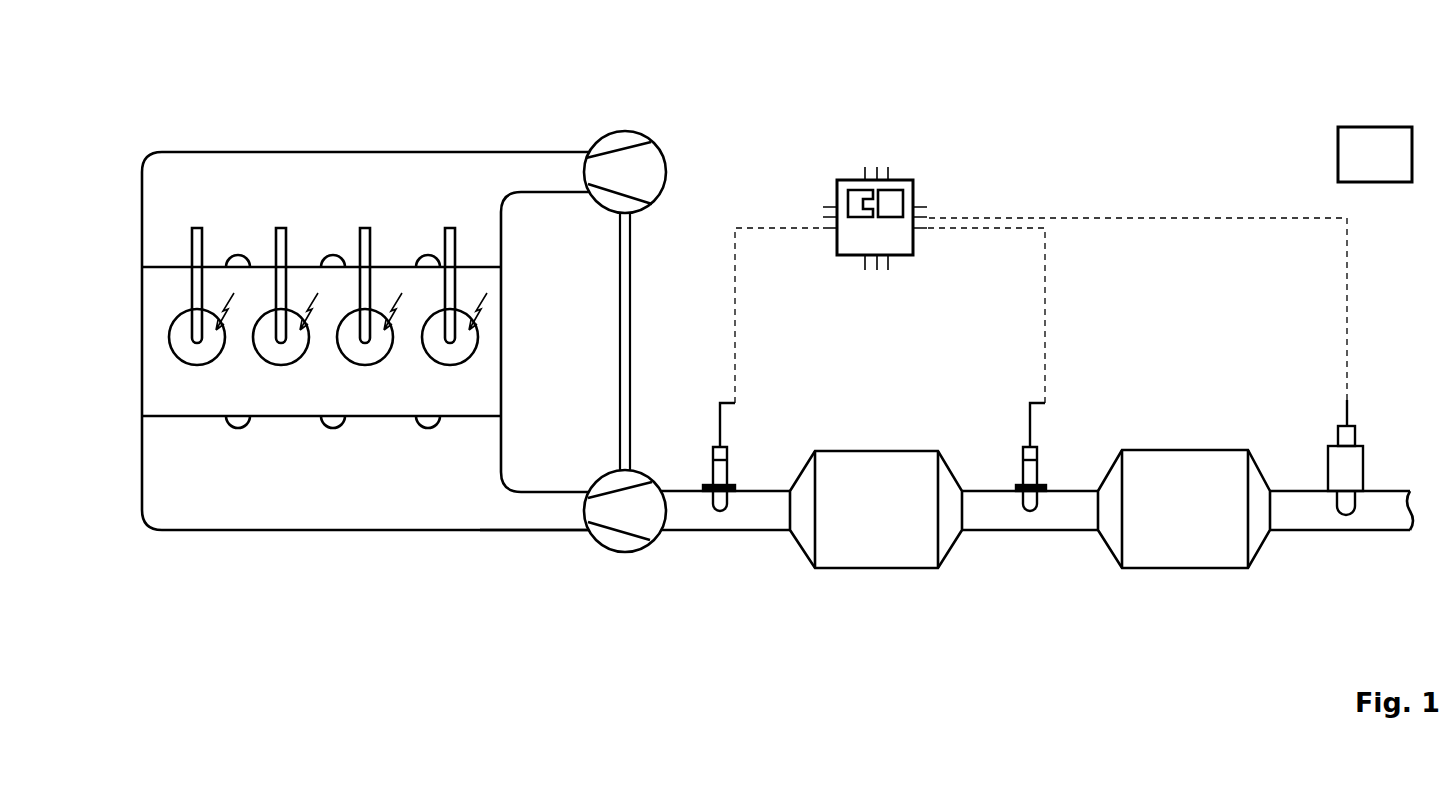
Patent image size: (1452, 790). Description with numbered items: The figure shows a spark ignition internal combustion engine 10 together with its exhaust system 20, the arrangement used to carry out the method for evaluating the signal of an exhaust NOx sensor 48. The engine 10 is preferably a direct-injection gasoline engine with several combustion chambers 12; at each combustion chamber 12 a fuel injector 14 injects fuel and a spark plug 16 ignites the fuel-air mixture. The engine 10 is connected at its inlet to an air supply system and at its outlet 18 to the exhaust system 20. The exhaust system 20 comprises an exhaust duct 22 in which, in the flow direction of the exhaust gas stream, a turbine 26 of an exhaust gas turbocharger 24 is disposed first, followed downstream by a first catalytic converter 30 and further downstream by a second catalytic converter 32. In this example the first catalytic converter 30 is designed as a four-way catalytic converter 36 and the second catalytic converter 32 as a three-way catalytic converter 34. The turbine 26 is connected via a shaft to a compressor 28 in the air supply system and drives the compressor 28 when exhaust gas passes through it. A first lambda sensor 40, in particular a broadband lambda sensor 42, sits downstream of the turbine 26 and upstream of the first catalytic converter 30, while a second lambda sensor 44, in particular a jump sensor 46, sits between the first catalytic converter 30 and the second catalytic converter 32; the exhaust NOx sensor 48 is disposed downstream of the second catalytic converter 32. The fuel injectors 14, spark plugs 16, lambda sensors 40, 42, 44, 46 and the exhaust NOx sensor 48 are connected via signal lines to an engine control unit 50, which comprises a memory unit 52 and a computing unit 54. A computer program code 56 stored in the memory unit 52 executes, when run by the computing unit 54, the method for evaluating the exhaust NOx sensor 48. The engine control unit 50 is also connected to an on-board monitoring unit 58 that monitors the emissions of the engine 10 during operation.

The spark ignition internal combustion engine 10 is at (150, 387).
The combustion chamber 12 is at (170, 337).
The fuel injector 14 is at (192, 288).
The spark plug 16 is at (226, 296).
The outlet 18 is at (152, 453).
The exhaust system 20 is at (1030, 625).
The exhaust duct 22 is at (540, 532).
The exhaust gas turbocharger 24 is at (645, 338).
The turbine 26 is at (624, 553).
The compressor 28 is at (624, 131).
The first catalytic converter 30 is at (876, 552).
The four-way catalytic converter 36 is at (870, 570).
The second catalytic converter 32 is at (1184, 551).
The three-way catalytic converter 34 is at (1185, 570).
The first lambda sensor 40 is at (789, 369).
The broadband lambda sensor 42 is at (728, 462).
The second lambda sensor 44 is at (1056, 369).
The jump sensor 46 is at (1038, 462).
The exhaust NOx sensor 48 is at (1364, 466).
The engine control unit 50 is at (908, 216).
The memory unit 52 is at (856, 198).
The computing unit 54 is at (890, 200).
The computer program code 56 is at (868, 212).
The on-board monitoring unit 58 is at (1370, 126).